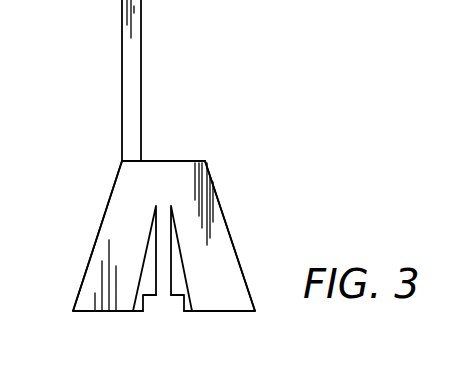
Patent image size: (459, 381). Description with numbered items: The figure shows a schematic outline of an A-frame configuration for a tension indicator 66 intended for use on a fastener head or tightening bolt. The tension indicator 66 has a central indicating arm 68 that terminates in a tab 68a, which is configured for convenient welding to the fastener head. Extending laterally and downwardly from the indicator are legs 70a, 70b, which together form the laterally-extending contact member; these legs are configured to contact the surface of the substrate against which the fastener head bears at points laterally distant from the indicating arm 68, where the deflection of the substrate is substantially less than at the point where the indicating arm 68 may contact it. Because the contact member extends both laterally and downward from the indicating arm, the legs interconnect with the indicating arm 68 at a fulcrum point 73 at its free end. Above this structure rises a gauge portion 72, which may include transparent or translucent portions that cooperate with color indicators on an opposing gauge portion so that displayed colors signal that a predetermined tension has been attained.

The tension indicator 66 is at (242, 195).
The central indicating arm 68 is at (157, 264).
The tab 68a is at (186, 302).
The leg 70a is at (93, 252).
The leg 70b is at (297, 231).
The gauge portion 72 is at (128, 80).
The fulcrum point 73 is at (167, 178).